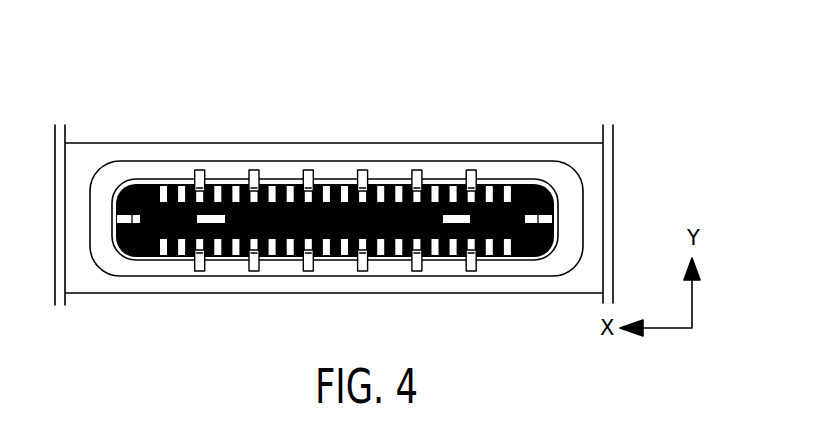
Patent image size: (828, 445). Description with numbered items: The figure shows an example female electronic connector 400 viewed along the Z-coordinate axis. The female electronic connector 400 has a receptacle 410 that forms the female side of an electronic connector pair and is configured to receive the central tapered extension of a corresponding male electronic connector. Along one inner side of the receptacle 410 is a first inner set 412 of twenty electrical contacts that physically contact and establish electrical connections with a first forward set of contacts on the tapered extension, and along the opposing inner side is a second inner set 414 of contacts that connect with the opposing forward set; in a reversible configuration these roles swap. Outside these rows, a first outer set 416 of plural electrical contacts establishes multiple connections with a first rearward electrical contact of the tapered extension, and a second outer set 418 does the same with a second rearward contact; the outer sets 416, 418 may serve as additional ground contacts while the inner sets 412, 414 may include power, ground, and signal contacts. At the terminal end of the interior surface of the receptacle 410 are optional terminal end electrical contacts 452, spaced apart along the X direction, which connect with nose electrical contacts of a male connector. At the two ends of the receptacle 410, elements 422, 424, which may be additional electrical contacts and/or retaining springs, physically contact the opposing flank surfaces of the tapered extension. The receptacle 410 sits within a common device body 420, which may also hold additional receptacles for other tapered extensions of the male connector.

The female electronic connector 400 is at (556, 112).
The receptacle 410 is at (147, 187).
The first inner set of plural electrical contacts 412 is at (182, 185).
The second inner set of plural electrical contacts 414 is at (237, 250).
The first outer set of electrical contacts 416 is at (256, 182).
The second outer set of electrical contacts 418 is at (307, 264).
The common device body 420 is at (82, 150).
The additional electrical contact or retaining spring 422 is at (128, 222).
The additional electrical contact or retaining spring 424 is at (545, 224).
The terminal end electrical contacts 452 is at (465, 215).